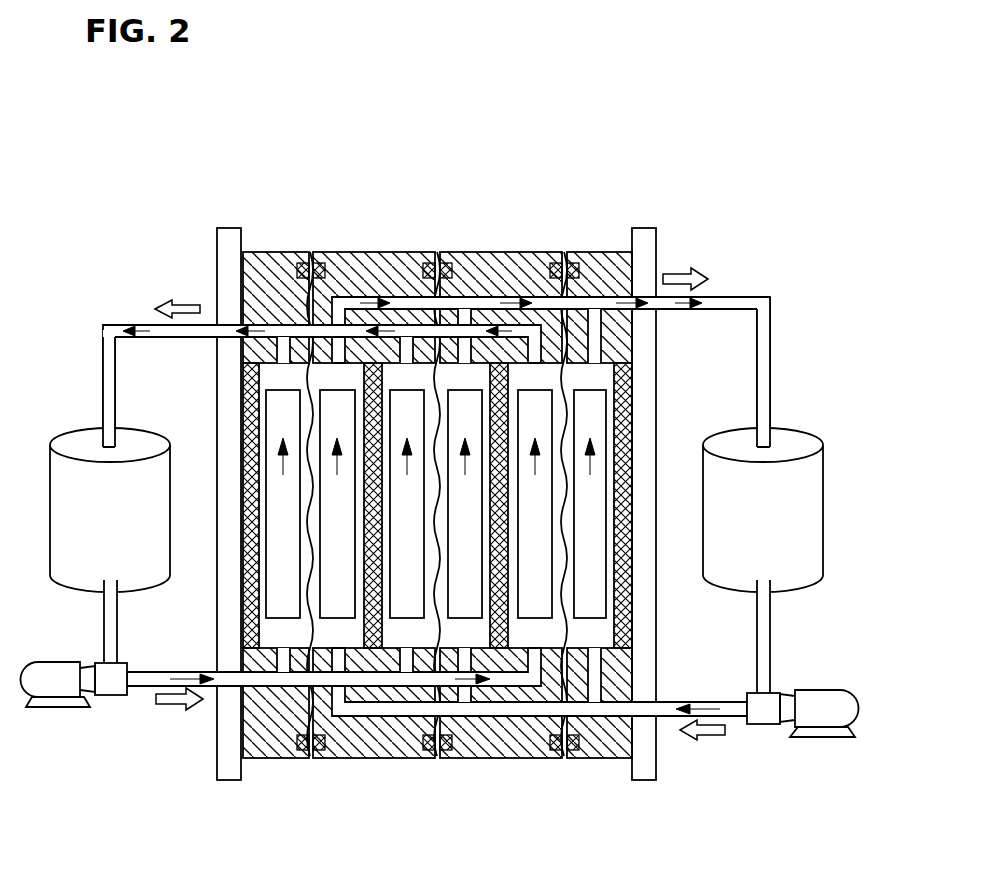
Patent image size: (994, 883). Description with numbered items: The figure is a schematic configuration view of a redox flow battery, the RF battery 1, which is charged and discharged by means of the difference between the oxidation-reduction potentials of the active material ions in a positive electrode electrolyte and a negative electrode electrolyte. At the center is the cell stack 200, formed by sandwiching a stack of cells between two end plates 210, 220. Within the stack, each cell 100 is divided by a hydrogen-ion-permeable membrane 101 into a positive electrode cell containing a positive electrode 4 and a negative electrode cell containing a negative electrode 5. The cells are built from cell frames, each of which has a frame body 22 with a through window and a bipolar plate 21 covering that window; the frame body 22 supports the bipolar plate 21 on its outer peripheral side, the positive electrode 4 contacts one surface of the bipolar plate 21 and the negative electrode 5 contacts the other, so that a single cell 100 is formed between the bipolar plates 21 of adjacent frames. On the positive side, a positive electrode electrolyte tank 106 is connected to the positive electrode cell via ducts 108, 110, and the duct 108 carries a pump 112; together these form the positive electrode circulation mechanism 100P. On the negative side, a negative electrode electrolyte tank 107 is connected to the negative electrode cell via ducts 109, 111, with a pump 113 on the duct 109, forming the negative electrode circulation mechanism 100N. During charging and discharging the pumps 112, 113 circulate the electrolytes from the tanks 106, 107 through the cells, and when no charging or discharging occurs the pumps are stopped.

The RF battery 1 is at (92, 138).
The cell stack 200 is at (539, 186).
The frame body 22 is at (262, 250).
The bipolar plate 21 is at (632, 406).
The positive electrode 4 is at (591, 594).
The negative electrode 5 is at (564, 578).
The cell 100 is at (560, 840).
The membrane 101 is at (574, 760).
The duct 110 is at (115, 322).
The duct 111 is at (759, 294).
The duct 108 is at (145, 687).
The duct 109 is at (725, 717).
The positive electrode electrolyte tank 106 is at (58, 433).
The negative electrode electrolyte tank 107 is at (814, 433).
The pump 112 is at (47, 665).
The pump 113 is at (822, 690).
The end plate 220 is at (230, 770).
The end plate 210 is at (650, 770).
The positive electrode circulation mechanism 100P is at (88, 743).
The negative electrode circulation mechanism 100N is at (788, 761).